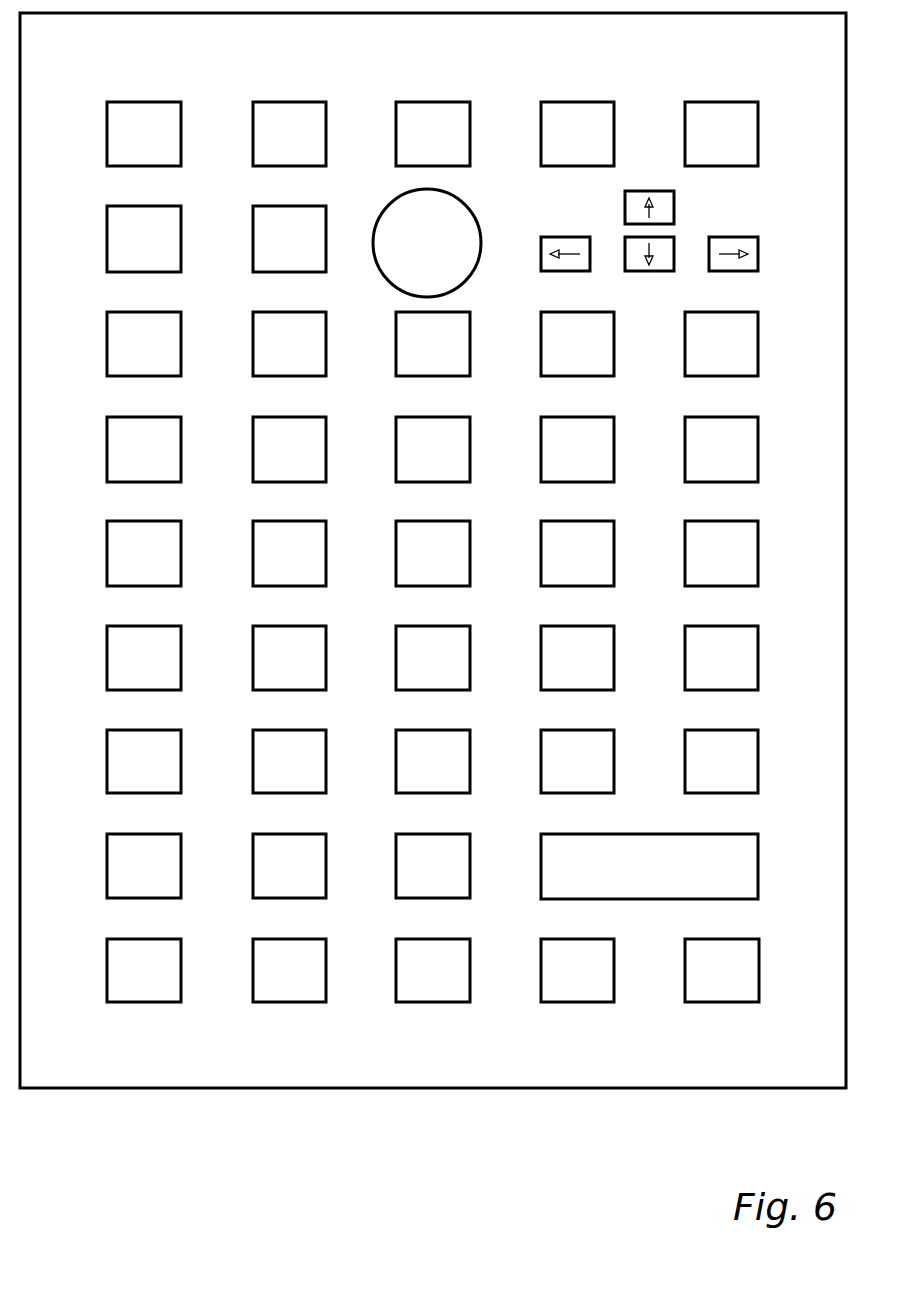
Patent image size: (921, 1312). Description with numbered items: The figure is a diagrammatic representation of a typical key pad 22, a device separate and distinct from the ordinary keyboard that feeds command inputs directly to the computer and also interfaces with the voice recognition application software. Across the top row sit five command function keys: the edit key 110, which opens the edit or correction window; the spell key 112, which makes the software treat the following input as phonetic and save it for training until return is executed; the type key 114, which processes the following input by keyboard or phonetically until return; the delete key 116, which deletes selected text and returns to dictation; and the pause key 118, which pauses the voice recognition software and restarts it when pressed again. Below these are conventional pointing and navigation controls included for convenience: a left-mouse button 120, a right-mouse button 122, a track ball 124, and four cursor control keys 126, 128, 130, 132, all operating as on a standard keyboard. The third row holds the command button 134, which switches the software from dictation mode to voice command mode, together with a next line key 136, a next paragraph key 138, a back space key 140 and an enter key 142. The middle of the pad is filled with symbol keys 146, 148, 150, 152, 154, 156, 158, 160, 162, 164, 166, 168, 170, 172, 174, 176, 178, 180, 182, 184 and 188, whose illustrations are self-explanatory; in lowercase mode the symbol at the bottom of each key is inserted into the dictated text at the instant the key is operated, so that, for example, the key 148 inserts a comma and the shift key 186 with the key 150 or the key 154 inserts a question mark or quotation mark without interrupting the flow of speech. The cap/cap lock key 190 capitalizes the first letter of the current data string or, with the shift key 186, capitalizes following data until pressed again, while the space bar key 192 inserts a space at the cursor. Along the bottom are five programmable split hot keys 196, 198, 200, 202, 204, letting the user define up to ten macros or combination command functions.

The key pad 22 is at (217, 1090).
The edit key 110 is at (107, 116).
The spell key 112 is at (253, 140).
The type key 114 is at (470, 142).
The delete key 116 is at (614, 142).
The pause key 118 is at (758, 142).
The left-mouse button 120 is at (107, 220).
The right-mouse button 122 is at (253, 247).
The track ball 124 is at (470, 204).
The cursor control key 126 is at (626, 189).
The cursor control key 128 is at (541, 253).
The cursor control key 130 is at (674, 256).
The cursor control key 132 is at (758, 250).
The command button 134 is at (107, 327).
The next line key 136 is at (253, 353).
The next paragraph key 138 is at (470, 353).
The back space key 140 is at (614, 353).
The enter key 142 is at (758, 352).
The symbol key 146 is at (107, 433).
The symbol key 148 is at (253, 458).
The symbol key 150 is at (470, 458).
The symbol key 152 is at (650, 457).
The symbol key 154 is at (758, 457).
The symbol key 156 is at (107, 537).
The symbol key 158 is at (253, 537).
The symbol key 160 is at (505, 530).
The symbol key 162 is at (652, 530).
The symbol key 164 is at (758, 535).
The symbol key 166 is at (110, 626).
The symbol key 168 is at (253, 640).
The symbol key 170 is at (470, 638).
The symbol key 172 is at (614, 638).
The symbol key 174 is at (758, 638).
The symbol key 176 is at (108, 794).
The symbol key 178 is at (253, 731).
The symbol key 180 is at (468, 727).
The symbol key 182 is at (612, 727).
The symbol key 184 is at (757, 727).
The shift key 186 is at (107, 883).
The symbol key 188 is at (253, 868).
The cap/cap lock key 190 is at (470, 868).
The space bar key 192 is at (758, 870).
The hot key 196 is at (107, 988).
The hot key 198 is at (253, 958).
The hot key 200 is at (470, 967).
The hot key 202 is at (614, 967).
The hot key 204 is at (759, 967).